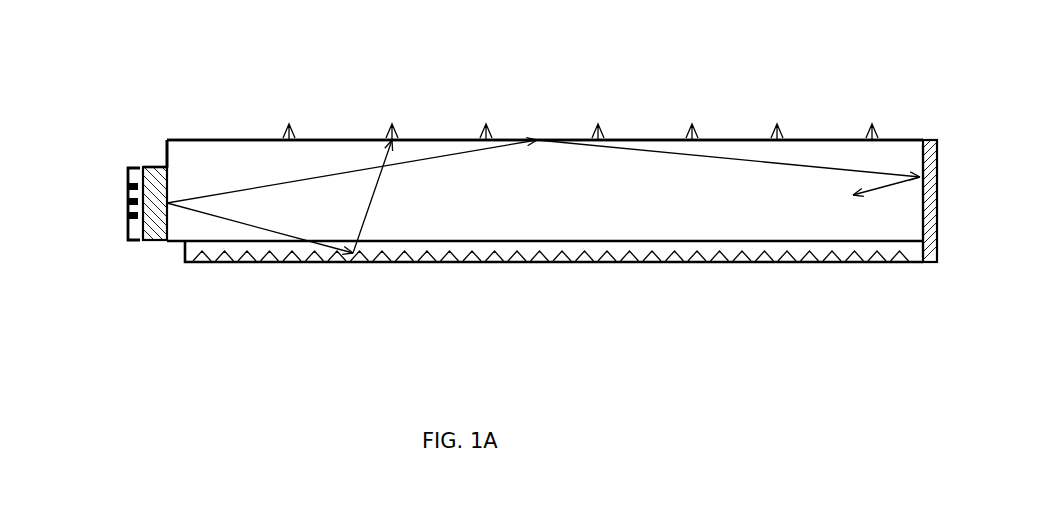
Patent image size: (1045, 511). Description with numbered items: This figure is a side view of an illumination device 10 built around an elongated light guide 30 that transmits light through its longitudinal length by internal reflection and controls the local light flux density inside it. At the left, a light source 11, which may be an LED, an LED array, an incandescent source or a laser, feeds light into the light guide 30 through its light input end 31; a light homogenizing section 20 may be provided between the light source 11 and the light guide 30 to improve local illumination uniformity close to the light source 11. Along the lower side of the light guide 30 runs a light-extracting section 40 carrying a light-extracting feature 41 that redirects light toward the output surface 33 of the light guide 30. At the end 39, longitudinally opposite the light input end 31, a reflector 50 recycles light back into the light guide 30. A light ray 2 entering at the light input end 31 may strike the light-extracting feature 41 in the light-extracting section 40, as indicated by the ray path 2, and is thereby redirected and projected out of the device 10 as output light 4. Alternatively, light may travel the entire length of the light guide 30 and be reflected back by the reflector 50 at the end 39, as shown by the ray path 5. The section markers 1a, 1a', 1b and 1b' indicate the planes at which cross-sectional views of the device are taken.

The illumination device 10 is at (187, 348).
The light source 11 is at (127, 187).
The light homogenizing section 20 is at (155, 242).
The light guide 30 is at (223, 150).
The light input end 31 is at (173, 178).
The output surface 33 is at (467, 135).
The end 39 is at (920, 213).
The light-extracting section 40 is at (183, 262).
The light-extracting feature 41 is at (357, 260).
The reflector 50 is at (930, 138).
The light ray 2 is at (270, 232).
The output light 4 is at (392, 120).
The ray path 5 is at (655, 153).
The section line 1a is at (273, 86).
The section line 1a' is at (272, 310).
The section line 1b is at (70, 52).
The section line 1b' is at (191, 53).